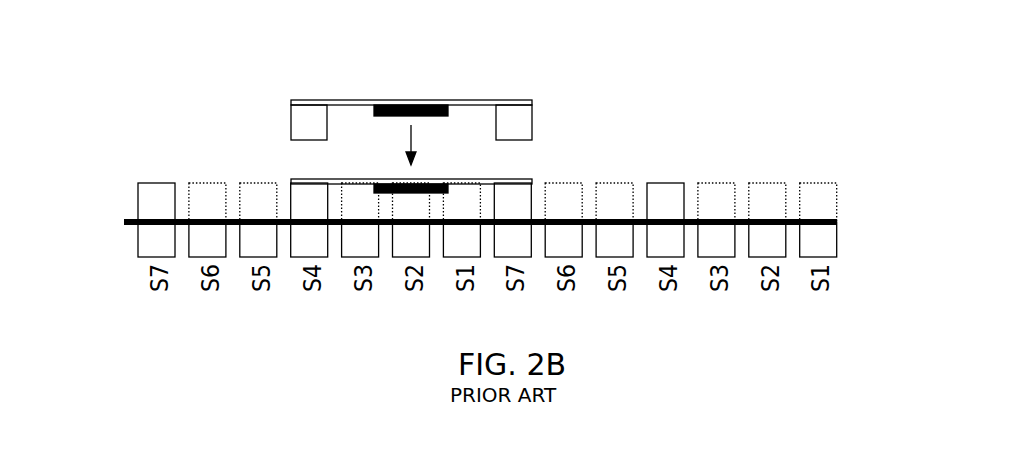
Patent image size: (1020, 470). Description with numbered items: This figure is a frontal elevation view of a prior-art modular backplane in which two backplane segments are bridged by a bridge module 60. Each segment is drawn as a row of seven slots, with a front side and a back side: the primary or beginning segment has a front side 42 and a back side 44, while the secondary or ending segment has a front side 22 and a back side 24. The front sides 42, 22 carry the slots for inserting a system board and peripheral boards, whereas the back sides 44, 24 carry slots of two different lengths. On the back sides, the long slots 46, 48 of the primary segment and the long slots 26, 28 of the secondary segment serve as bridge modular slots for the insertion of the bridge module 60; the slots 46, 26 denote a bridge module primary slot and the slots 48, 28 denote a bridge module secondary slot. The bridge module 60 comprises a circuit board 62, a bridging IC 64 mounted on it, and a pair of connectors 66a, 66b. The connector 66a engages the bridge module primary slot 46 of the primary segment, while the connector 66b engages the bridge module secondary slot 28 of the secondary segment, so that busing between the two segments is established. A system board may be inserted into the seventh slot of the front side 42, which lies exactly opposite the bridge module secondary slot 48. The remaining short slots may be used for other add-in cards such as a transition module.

The bridge module 60 is at (432, 77).
The circuit board 62 is at (352, 100).
The bridging IC 64 is at (412, 106).
The connector 66a is at (302, 127).
The connector 66b is at (522, 127).
The long slot 48 is at (162, 200).
The long slot 46 is at (302, 205).
The long slot 28 is at (520, 198).
The long slot 26 is at (662, 198).
The back side 44 is at (133, 220).
The front side 42 is at (133, 227).
The back side 24 is at (828, 217).
The front side 22 is at (827, 226).